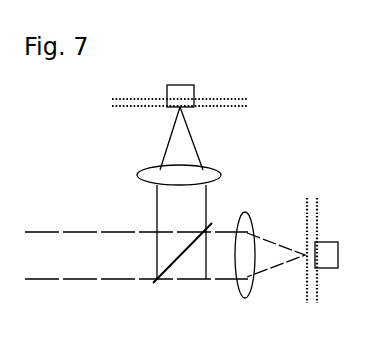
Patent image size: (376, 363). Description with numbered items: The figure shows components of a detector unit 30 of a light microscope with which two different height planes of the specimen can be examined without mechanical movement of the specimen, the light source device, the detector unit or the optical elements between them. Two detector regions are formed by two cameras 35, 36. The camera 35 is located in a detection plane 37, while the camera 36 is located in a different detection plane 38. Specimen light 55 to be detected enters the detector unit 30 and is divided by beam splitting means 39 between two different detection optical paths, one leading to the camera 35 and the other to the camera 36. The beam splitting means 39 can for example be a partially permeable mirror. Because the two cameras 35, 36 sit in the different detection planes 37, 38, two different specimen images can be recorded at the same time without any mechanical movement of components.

The detector unit 30 is at (299, 125).
The camera 35 is at (180, 85).
The camera 36 is at (329, 242).
The detection plane 37 is at (240, 108).
The detection plane 38 is at (240, 100).
The beam splitting means 39 is at (146, 287).
The specimen light 55 is at (49, 268).